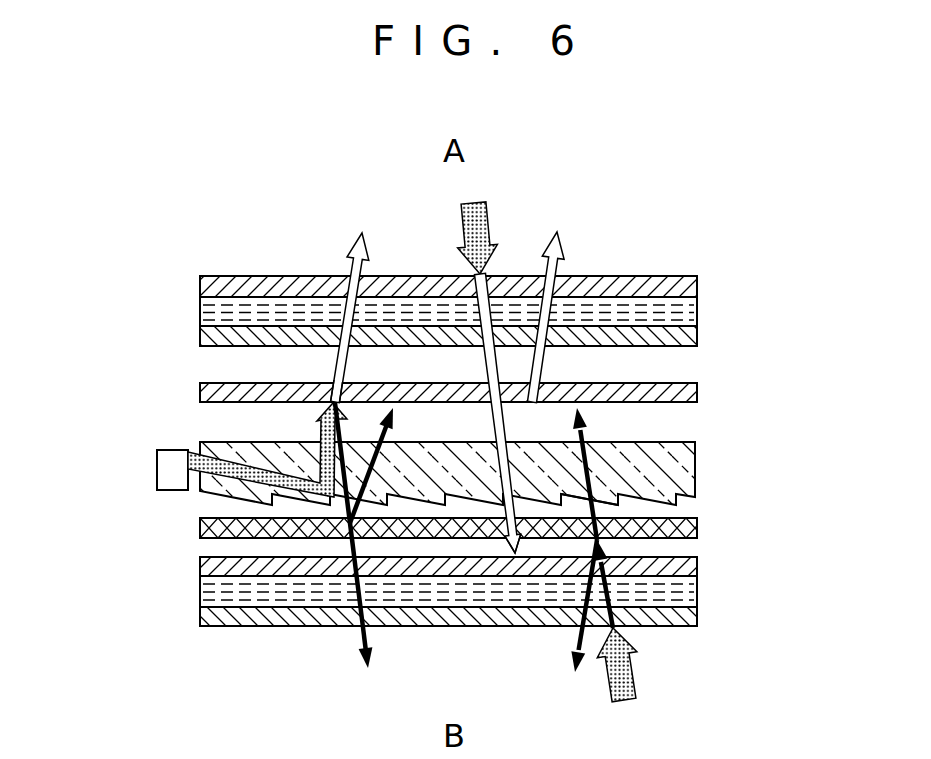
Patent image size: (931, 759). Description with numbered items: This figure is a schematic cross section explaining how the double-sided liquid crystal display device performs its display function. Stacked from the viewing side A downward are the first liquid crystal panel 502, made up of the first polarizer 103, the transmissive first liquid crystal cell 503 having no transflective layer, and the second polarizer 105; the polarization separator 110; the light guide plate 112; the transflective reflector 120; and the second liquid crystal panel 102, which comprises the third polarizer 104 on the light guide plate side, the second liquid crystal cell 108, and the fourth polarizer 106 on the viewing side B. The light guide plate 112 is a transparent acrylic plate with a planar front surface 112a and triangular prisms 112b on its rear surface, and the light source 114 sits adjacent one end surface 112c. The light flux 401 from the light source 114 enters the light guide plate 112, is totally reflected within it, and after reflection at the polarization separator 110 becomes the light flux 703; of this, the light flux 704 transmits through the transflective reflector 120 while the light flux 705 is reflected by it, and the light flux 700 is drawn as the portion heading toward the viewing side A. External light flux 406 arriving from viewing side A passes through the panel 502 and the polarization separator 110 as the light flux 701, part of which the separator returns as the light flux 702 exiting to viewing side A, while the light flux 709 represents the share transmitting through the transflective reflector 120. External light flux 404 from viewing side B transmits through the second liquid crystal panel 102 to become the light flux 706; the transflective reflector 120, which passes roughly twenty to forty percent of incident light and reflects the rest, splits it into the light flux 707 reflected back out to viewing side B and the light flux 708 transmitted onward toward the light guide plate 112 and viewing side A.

The first liquid crystal panel 502 is at (188, 277).
The first polarizer 103 is at (697, 281).
The first liquid crystal cell 503 is at (697, 312).
The second polarizer 105 is at (697, 343).
The polarization separator 110 is at (697, 392).
The light guide plate 112 is at (690, 453).
The front surface 112a is at (667, 442).
The prisms 112b is at (657, 501).
The end surface 112c is at (200, 480).
The light source 114 is at (157, 470).
The transflective reflector 120 is at (697, 528).
The second liquid crystal panel 102 is at (188, 557).
The third polarizer 104 is at (697, 561).
The second liquid crystal cell 108 is at (697, 593).
The fourth polarizer 106 is at (697, 612).
The light flux 401 is at (318, 429).
The light flux 404 is at (640, 694).
The light flux 406 is at (488, 212).
The light emitted toward side A 700 is at (352, 262).
The light flux 701 is at (490, 378).
The light flux 702 is at (563, 263).
The light flux 703 is at (348, 401).
The light flux 704 is at (357, 640).
The light flux 705 is at (397, 421).
The light flux 706 is at (608, 588).
The light flux 707 is at (566, 637).
The light flux 708 is at (584, 428).
The light flux 709 is at (510, 556).